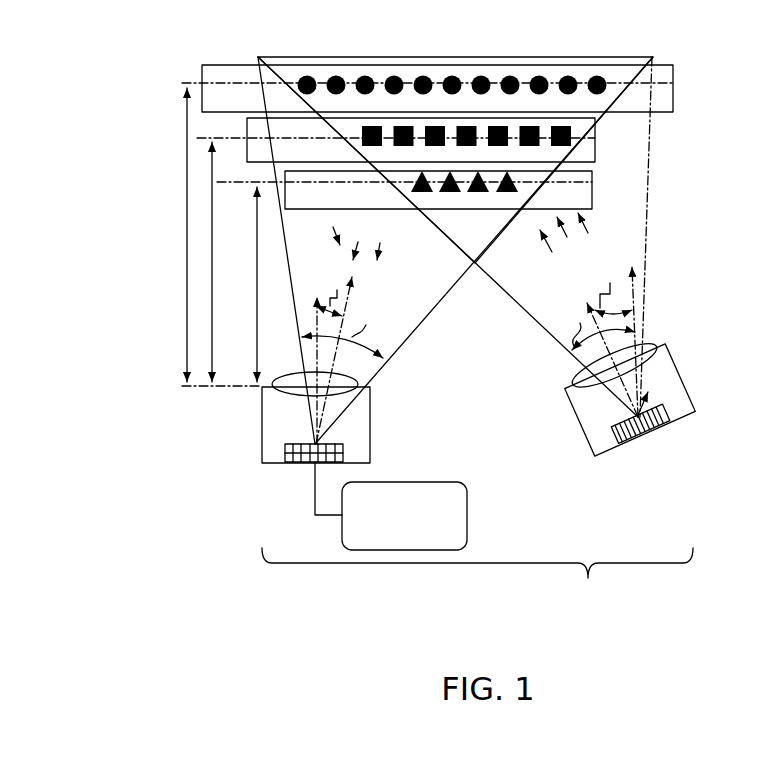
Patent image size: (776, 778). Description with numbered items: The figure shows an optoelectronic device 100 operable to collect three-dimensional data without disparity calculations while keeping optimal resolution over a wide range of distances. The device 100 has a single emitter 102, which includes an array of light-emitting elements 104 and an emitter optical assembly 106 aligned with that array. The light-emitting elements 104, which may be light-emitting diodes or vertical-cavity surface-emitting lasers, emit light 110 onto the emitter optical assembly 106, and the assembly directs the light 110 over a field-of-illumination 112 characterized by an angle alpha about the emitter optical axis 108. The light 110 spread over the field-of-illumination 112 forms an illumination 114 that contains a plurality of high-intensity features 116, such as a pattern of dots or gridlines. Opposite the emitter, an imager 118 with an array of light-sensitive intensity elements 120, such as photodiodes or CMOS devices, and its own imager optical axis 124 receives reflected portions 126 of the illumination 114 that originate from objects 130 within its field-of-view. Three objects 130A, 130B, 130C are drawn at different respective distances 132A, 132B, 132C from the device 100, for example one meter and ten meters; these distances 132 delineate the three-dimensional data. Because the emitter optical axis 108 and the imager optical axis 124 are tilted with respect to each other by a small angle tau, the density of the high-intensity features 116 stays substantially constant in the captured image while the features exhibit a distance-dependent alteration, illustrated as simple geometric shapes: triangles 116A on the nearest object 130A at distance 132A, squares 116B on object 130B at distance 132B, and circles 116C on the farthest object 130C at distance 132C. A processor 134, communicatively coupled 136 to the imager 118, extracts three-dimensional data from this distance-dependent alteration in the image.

The optoelectronic device 100 is at (477, 580).
The emitter 102 is at (492, 259).
The array of light-emitting elements 104 is at (665, 422).
The emitter optical assembly 106 is at (647, 347).
The emitter optical axis 108 is at (628, 385).
The light 110 is at (668, 408).
The field-of-illumination 112 is at (647, 236).
The illumination 114 is at (515, 50).
The high-intensity features 116 is at (514, 141).
The triangles 116A is at (518, 182).
The squares 116B is at (572, 141).
The circles 116C is at (613, 92).
The imager 118 is at (437, 267).
The array of light-sensitive intensity elements 120 is at (285, 448).
The imager optical axis 124 is at (289, 385).
The reflected portions of the illumination 126 is at (357, 241).
The objects 130 is at (392, 137).
The object 130A is at (298, 207).
The object 130B is at (282, 163).
The object 130C is at (211, 106).
The distances 132 is at (191, 237).
The distance 132A is at (257, 328).
The distance 132B is at (213, 278).
The distance 132C is at (187, 223).
The processor 134 is at (390, 533).
The communicative coupling 136 is at (314, 513).